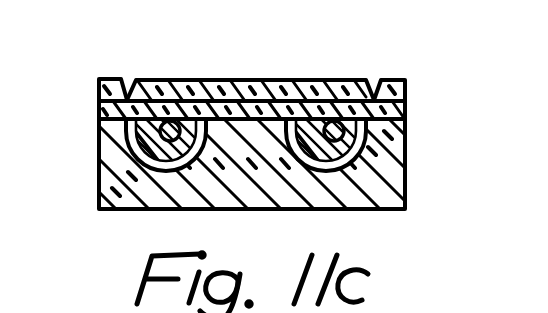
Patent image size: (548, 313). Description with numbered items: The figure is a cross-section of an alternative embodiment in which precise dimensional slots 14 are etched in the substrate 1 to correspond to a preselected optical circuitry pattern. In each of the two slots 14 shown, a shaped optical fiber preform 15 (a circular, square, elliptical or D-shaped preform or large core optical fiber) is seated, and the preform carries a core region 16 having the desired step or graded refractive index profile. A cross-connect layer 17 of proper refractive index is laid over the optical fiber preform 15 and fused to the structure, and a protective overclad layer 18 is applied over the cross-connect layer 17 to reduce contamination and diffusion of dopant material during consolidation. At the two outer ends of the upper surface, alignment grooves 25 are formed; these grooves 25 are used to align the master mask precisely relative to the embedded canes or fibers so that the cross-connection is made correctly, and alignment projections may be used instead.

The substrate 1 is at (113, 176).
The slots 14 is at (104, 134).
The optical fiber preform 15 is at (343, 133).
The core region 16 is at (360, 157).
The cross-connect layer 17 is at (99, 107).
The protective overclad layer 18 is at (238, 81).
The alignment grooves 25 is at (128, 79).